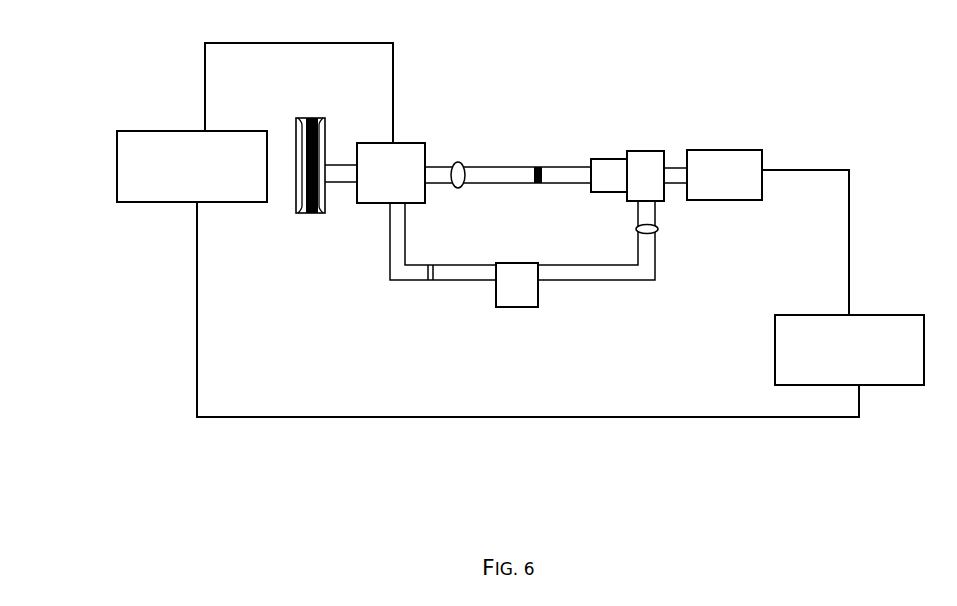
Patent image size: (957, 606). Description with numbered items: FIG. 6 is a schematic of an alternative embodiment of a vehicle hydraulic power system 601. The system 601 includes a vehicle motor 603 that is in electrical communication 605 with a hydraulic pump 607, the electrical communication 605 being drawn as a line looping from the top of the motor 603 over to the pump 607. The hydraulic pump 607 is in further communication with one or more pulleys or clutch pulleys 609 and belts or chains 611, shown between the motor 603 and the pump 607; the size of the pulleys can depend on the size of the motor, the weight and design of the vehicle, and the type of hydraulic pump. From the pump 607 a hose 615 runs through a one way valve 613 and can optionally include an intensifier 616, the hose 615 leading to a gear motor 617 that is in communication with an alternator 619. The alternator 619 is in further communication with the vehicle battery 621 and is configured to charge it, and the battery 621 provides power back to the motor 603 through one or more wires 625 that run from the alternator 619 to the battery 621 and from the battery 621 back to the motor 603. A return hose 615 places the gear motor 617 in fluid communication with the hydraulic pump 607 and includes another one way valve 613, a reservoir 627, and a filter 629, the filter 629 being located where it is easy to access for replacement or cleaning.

The vehicle hydraulic power system 601 is at (117, 50).
The vehicle motor 603 is at (180, 131).
The electrical communication 605 is at (393, 82).
The hydraulic pump 607 is at (418, 143).
The pulley 609 is at (296, 128).
The belt 611 is at (312, 118).
The one way valve 613 is at (457, 162).
The hose 615 is at (517, 167).
The intensifier 616 is at (538, 167).
The gear motor 617 is at (643, 151).
The alternator 619 is at (732, 150).
The vehicle battery 621 is at (893, 315).
The wire 625 is at (849, 232).
The reservoir 627 is at (520, 307).
The filter 629 is at (432, 280).